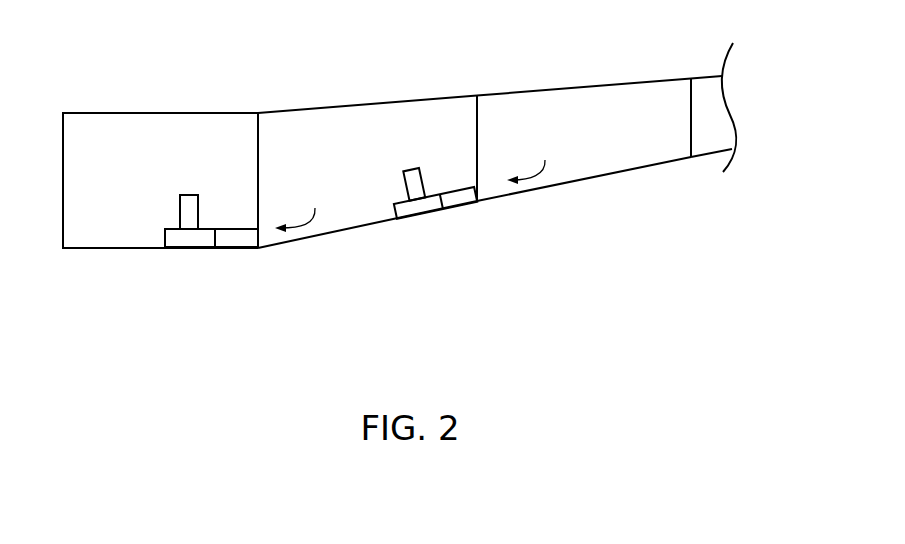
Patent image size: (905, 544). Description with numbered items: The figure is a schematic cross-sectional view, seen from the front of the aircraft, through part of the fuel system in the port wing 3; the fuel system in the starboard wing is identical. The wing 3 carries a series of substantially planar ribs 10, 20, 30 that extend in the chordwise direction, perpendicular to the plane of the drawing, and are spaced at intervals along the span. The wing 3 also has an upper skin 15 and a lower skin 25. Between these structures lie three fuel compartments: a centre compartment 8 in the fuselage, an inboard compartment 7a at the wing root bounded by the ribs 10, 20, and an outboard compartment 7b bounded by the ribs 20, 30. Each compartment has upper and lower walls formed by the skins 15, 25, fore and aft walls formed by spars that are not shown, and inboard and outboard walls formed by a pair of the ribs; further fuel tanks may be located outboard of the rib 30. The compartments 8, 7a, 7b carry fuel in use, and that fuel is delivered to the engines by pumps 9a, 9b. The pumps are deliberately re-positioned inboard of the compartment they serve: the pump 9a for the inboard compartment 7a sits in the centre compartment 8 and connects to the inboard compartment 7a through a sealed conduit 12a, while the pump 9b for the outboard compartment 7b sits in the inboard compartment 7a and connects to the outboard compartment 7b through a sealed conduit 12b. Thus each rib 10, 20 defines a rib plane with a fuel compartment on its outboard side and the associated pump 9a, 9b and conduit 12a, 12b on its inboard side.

The port wing 3 is at (546, 302).
The inboard compartment 7a is at (338, 128).
The outboard compartment 7b is at (578, 108).
The centre compartment 8 is at (93, 132).
The pump 9a is at (182, 264).
The pump 9b is at (416, 228).
The rib 10 is at (263, 132).
The sealed conduit 12a is at (232, 238).
The sealed conduit 12b is at (457, 197).
The upper skin 15 is at (412, 97).
The rib 20 is at (479, 106).
The lower skin 25 is at (618, 178).
The rib 30 is at (693, 88).